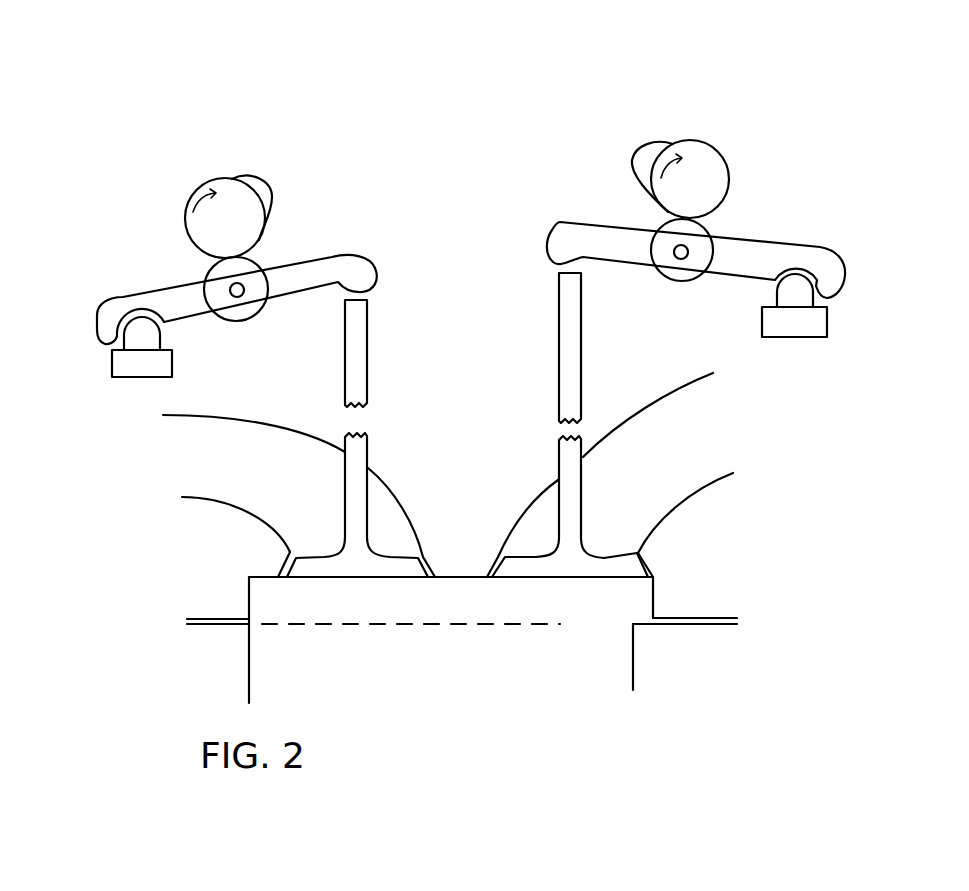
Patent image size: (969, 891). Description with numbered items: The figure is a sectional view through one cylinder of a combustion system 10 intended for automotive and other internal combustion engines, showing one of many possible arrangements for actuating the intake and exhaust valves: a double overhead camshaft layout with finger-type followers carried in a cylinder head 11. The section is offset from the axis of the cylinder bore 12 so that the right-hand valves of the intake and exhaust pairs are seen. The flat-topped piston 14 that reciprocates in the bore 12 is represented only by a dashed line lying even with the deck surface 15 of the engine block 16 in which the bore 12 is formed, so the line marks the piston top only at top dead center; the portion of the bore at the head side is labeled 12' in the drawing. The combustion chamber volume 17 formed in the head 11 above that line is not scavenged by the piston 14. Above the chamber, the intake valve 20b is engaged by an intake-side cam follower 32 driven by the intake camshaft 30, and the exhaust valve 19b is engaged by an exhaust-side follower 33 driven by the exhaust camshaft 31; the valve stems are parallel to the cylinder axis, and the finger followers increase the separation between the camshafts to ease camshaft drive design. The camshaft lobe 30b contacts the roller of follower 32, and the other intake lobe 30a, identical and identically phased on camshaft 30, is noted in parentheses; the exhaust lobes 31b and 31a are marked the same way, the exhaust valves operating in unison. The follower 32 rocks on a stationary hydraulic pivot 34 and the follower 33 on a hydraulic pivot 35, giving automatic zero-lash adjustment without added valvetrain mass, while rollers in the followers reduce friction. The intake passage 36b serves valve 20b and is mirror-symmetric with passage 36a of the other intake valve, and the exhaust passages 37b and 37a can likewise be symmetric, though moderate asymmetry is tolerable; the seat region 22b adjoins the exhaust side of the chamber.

The combustion system 10 is at (523, 112).
The cylinder head 11 is at (470, 509).
The cylinder bore 12 is at (410, 660).
The cylinder head upper portion 12' is at (280, 598).
The piston 14 is at (380, 623).
The deck surface 15 is at (633, 626).
The engine block 16 is at (686, 672).
The combustion chamber volume 17 is at (470, 614).
The exhaust valve 19b is at (367, 380).
The intake valve 20b is at (582, 337).
The valve seat 22b is at (653, 588).
The intake camshaft 30 is at (714, 205).
The camshaft lobe 30b is at (705, 156).
The camshaft lobe 30a is at (638, 146).
The exhaust camshaft 31 is at (245, 236).
The intake cam lobe 31b is at (307, 183).
The intake cam lobe 31a is at (254, 170).
The intake-side cam follower 32 is at (594, 224).
The exhaust-side follower 33 is at (349, 258).
The stationary hydraulic pivot 34 is at (762, 327).
The hydraulic pivot 35 is at (173, 357).
The intake passage 36b is at (610, 475).
The intake passage 36a is at (610, 475).
The exhaust passage 37b is at (299, 496).
The exhaust passage 37a is at (296, 481).